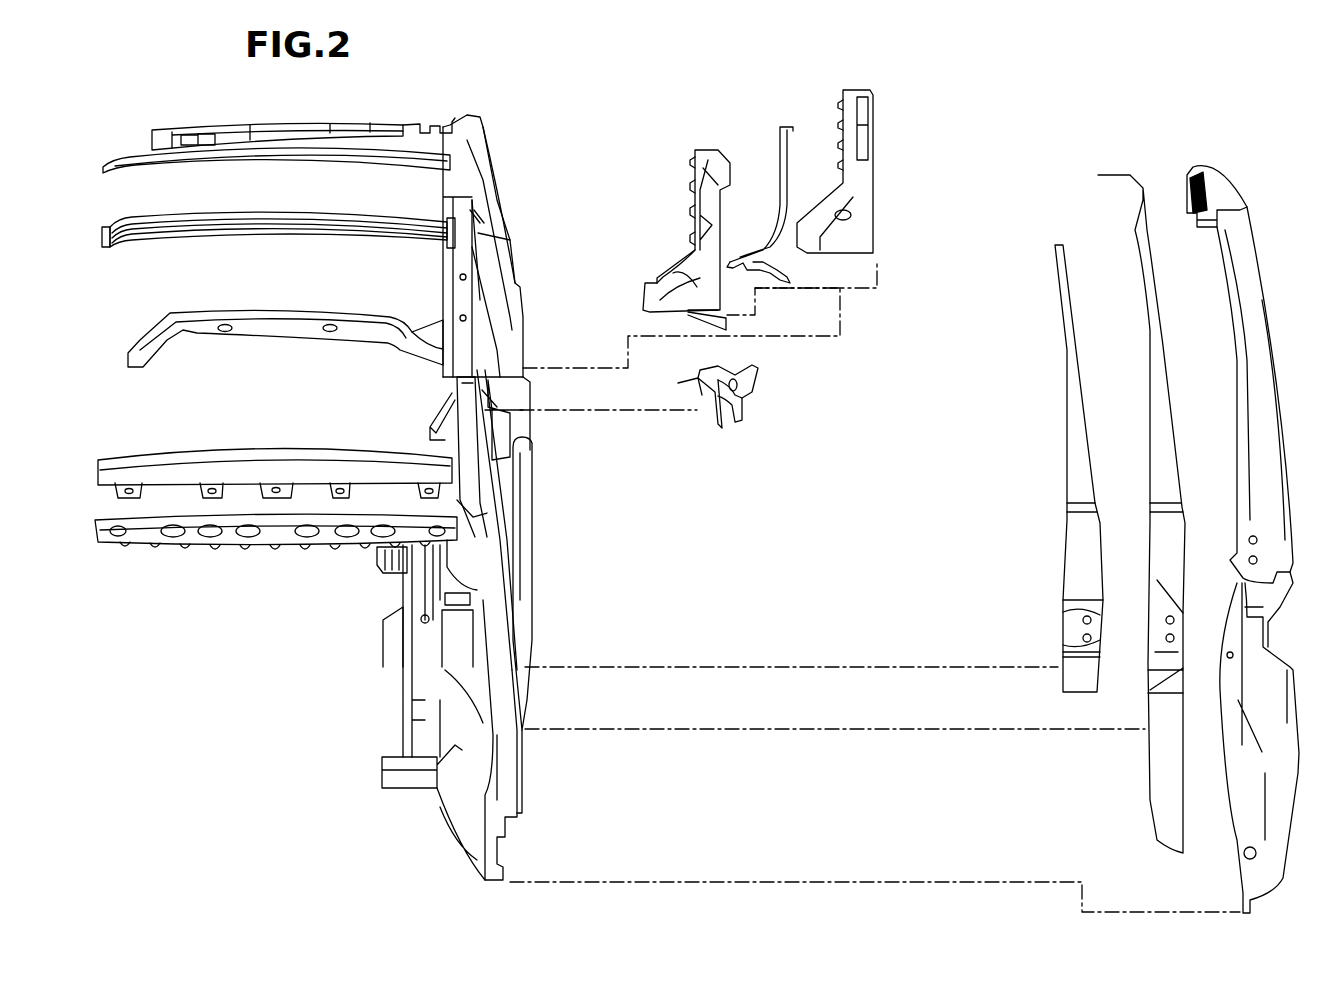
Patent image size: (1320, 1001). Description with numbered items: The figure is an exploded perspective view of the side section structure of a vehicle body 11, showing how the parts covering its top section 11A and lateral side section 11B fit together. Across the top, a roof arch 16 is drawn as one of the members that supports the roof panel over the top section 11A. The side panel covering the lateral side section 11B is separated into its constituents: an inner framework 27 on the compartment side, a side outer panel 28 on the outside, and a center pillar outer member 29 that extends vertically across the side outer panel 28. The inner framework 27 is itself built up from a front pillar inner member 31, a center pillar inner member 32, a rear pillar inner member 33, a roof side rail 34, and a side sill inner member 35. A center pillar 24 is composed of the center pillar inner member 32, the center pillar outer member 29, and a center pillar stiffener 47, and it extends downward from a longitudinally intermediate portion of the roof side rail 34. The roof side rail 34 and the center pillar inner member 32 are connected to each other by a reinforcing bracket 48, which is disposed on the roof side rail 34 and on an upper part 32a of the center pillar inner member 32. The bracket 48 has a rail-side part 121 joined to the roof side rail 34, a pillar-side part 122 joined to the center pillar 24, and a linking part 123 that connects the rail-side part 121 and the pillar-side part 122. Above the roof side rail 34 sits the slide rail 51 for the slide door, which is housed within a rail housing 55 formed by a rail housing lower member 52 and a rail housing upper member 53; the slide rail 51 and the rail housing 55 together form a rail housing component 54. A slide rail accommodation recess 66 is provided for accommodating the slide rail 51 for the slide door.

The vehicle body 11 is at (607, 73).
The top section 11A is at (392, 185).
The lateral side section 11B is at (538, 162).
The roof arch 16 is at (282, 305).
The center pillar 24 is at (1143, 165).
The inner framework 27 is at (548, 512).
The side outer panel 28 is at (1213, 165).
The center pillar outer member 29 is at (1112, 175).
The front pillar inner member 31 is at (500, 630).
The center pillar inner member 32 is at (498, 483).
The upper part of the center pillar inner member 32a is at (470, 411).
The rear pillar inner member 33 is at (495, 278).
The roof side rail 34 is at (470, 305).
The side sill inner member 35 is at (513, 540).
The center pillar stiffener 47 is at (1060, 240).
The bracket 48 is at (857, 385).
The slide rail 51 is at (795, 273).
The rail housing lower member 52 is at (707, 150).
The rail housing upper member 53 is at (880, 143).
The rail housing component 54 is at (1000, 107).
The rail housing 55 is at (950, 67).
The slide rail accommodation recess 66 is at (688, 290).
The rail-side part 121 is at (725, 430).
The pillar-side part 122 is at (755, 411).
The linking part 123 is at (750, 368).